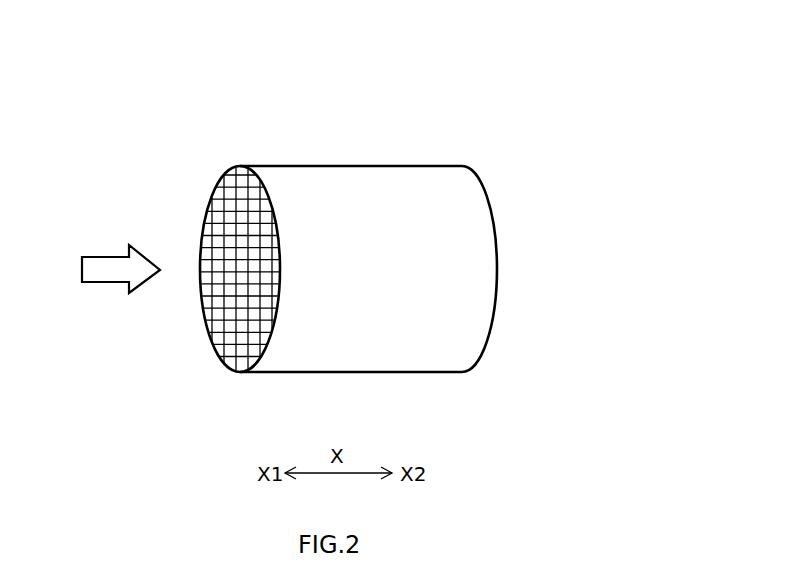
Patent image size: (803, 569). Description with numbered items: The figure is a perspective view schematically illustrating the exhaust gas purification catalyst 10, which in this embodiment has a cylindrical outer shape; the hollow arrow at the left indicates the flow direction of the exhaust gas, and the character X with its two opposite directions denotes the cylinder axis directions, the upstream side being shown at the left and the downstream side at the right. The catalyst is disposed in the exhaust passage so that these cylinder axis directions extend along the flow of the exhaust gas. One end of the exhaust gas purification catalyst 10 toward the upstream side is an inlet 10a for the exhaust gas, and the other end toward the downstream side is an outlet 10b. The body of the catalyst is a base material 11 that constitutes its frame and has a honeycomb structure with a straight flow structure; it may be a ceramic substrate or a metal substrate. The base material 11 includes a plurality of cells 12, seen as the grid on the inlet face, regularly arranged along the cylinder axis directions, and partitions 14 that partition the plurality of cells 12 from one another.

The exhaust gas purification catalyst 10 is at (353, 216).
The inlet 10a is at (202, 253).
The outlet 10b is at (470, 163).
The base material 11 is at (380, 178).
The cells 12 is at (233, 265).
The partitions 14 is at (243, 313).